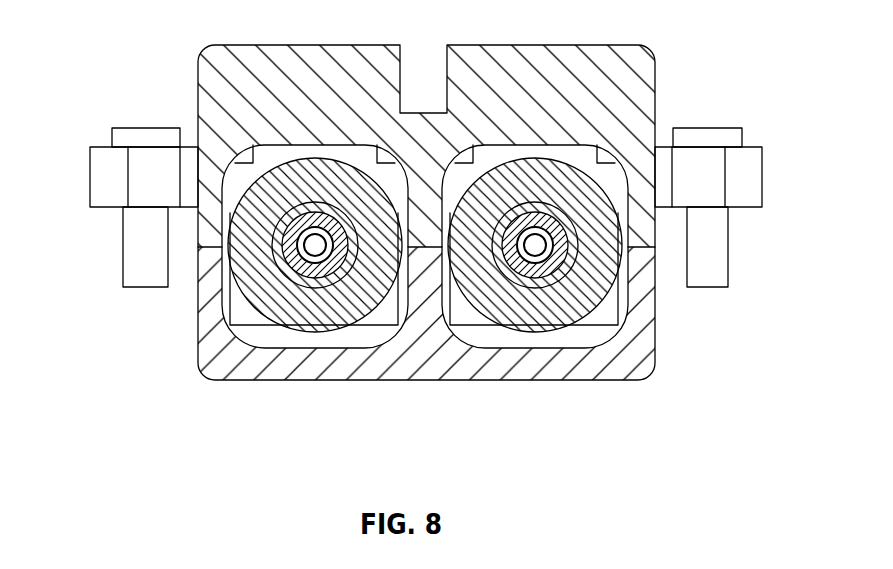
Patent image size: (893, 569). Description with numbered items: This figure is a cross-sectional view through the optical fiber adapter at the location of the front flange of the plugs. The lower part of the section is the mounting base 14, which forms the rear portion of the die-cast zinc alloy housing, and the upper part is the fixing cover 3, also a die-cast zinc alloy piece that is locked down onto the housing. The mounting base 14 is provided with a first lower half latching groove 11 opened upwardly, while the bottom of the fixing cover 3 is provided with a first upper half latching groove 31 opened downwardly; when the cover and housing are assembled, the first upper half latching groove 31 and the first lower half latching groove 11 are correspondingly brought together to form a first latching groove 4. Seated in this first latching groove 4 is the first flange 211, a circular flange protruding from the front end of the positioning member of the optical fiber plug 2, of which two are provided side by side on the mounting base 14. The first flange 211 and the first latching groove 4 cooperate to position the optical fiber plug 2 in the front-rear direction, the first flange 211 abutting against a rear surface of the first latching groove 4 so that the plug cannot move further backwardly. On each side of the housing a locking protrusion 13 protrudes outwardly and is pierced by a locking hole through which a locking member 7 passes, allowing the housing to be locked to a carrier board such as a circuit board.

The optical fiber plug 2 is at (526, 262).
The fixing cover 3 is at (208, 104).
The first latching groove 4 is at (103, 331).
The locking member 7 is at (704, 135).
The first lower half latching groove 11 is at (242, 321).
The locking protrusion 13 is at (742, 193).
The mounting base 14 is at (432, 365).
The first upper half latching groove 31 is at (234, 180).
The first flange 211 is at (303, 313).